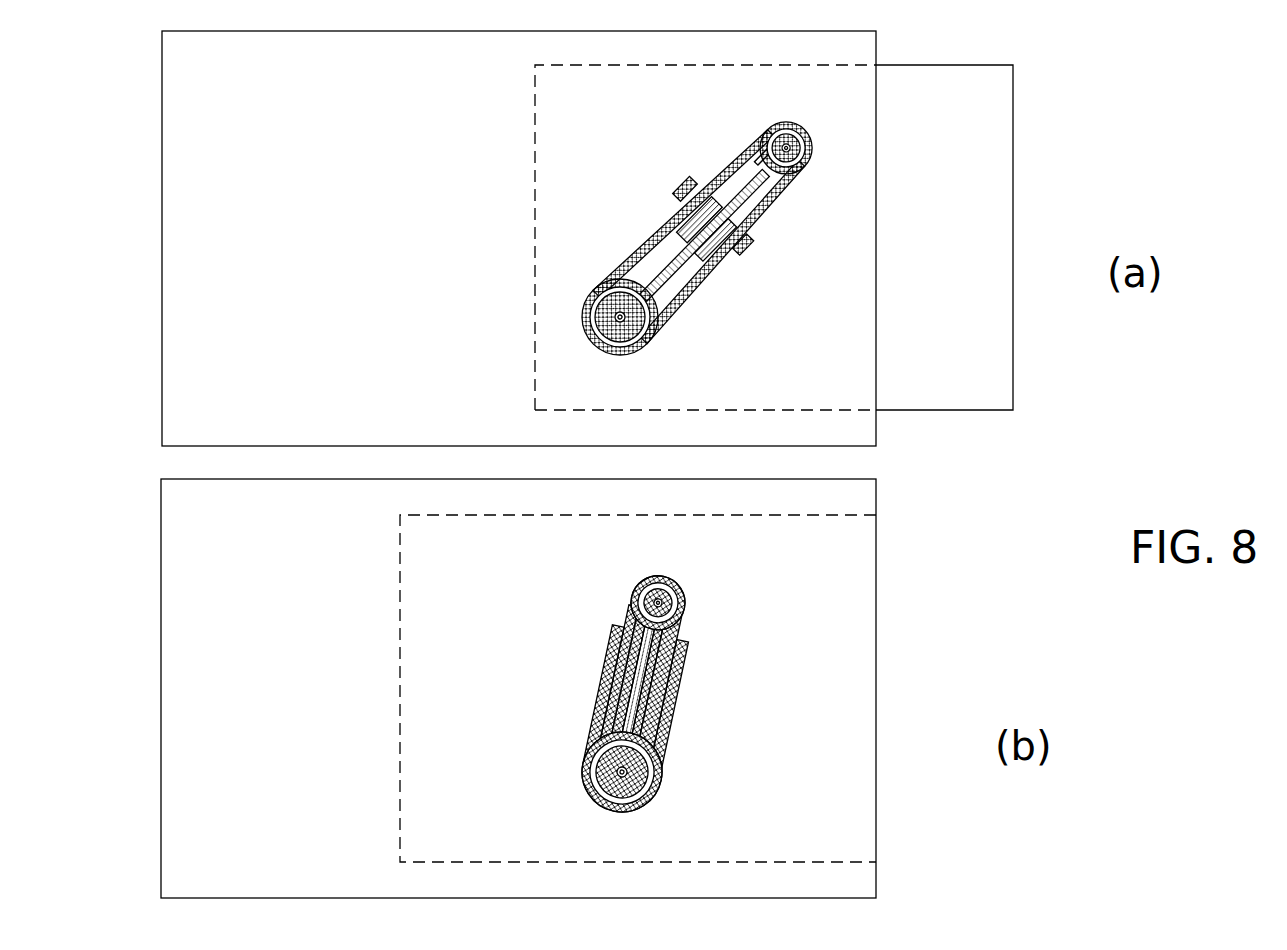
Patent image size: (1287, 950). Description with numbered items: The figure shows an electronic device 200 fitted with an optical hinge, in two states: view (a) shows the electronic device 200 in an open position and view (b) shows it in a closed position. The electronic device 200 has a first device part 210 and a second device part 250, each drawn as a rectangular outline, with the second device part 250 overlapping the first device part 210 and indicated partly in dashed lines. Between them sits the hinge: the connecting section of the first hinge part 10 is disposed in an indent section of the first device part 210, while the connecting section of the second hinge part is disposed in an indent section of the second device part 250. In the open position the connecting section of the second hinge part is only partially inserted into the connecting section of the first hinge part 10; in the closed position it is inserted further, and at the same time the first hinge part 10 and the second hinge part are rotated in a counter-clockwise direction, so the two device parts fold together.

The first hinge part 10 is at (681, 457).
The electronic device 200 is at (656, 464).
The first device part 210 is at (168, 275).
The second device part 250 is at (996, 168).